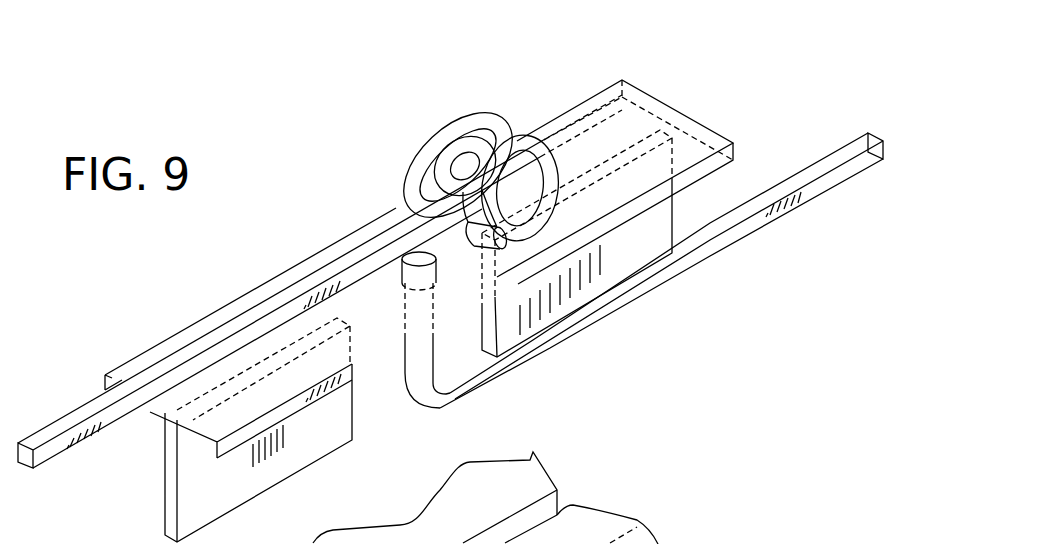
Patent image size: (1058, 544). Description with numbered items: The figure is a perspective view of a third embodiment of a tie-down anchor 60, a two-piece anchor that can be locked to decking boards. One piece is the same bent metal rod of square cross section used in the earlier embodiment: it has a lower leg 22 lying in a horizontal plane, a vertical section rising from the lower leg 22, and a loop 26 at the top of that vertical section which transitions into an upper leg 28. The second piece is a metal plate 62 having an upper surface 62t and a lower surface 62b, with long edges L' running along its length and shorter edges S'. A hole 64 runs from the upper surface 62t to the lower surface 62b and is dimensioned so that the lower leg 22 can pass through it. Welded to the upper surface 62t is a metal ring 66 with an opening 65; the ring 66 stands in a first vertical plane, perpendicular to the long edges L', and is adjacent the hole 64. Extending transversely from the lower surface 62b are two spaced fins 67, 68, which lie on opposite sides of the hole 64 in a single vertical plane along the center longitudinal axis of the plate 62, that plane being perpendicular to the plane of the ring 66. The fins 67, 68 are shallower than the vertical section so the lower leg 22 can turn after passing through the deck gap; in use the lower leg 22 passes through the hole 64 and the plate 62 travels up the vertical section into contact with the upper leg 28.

The lower leg 22 is at (825, 185).
The loop 26 is at (428, 147).
The upper leg 28 is at (47, 430).
The tie-down anchor 60 is at (473, 278).
The metal plate 62 is at (671, 149).
The upper surface 62t is at (687, 148).
The lower surface 62b is at (735, 172).
The hole 64 is at (410, 258).
The opening 65 is at (507, 200).
The metal ring 66 is at (517, 160).
The fin 67 is at (182, 488).
The fin 68 is at (627, 253).
The short plate S' is at (681, 65).
The long edges L' is at (250, 299).